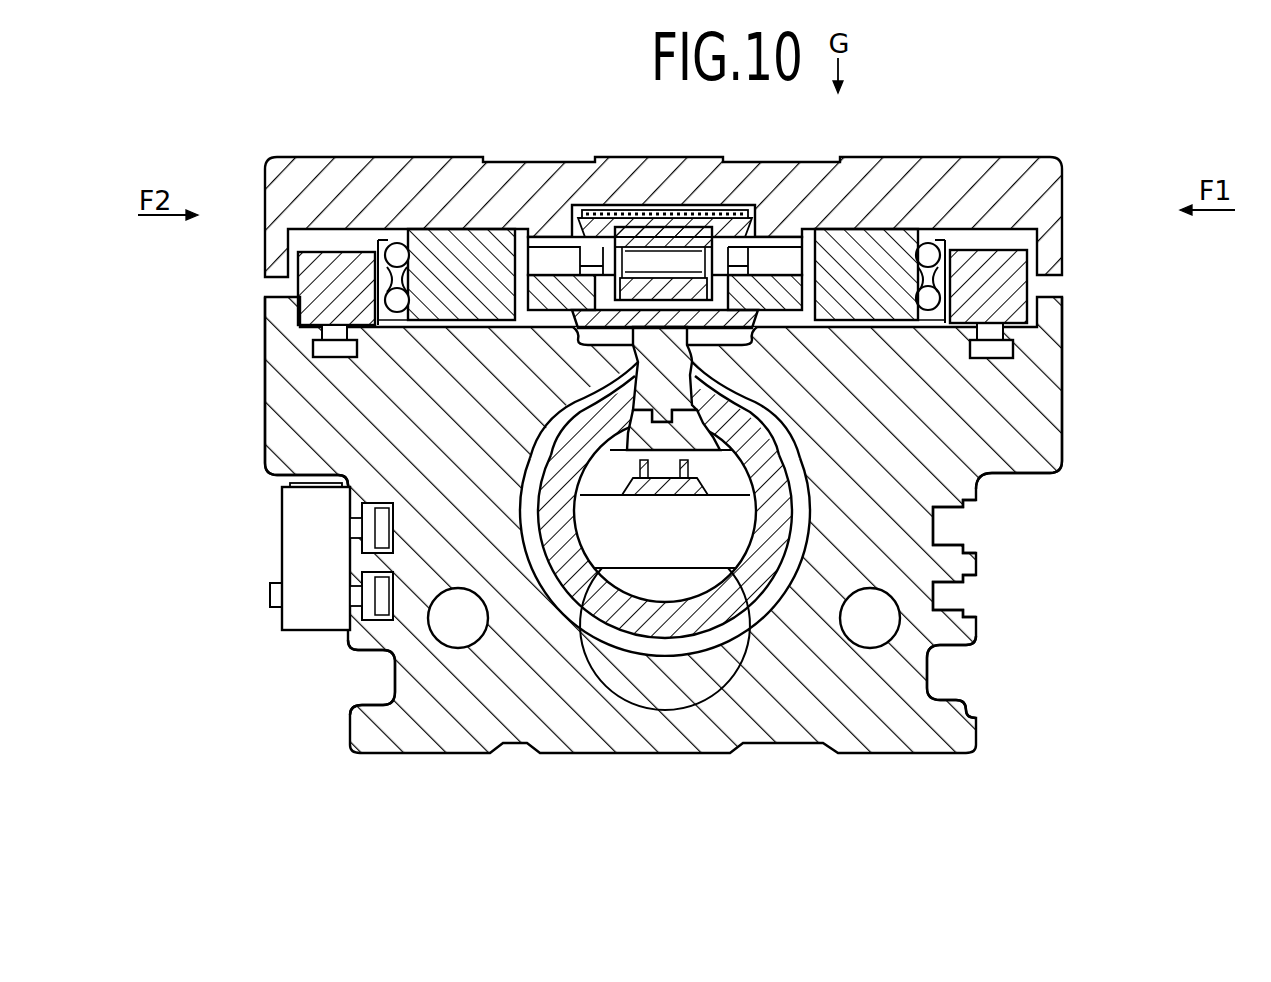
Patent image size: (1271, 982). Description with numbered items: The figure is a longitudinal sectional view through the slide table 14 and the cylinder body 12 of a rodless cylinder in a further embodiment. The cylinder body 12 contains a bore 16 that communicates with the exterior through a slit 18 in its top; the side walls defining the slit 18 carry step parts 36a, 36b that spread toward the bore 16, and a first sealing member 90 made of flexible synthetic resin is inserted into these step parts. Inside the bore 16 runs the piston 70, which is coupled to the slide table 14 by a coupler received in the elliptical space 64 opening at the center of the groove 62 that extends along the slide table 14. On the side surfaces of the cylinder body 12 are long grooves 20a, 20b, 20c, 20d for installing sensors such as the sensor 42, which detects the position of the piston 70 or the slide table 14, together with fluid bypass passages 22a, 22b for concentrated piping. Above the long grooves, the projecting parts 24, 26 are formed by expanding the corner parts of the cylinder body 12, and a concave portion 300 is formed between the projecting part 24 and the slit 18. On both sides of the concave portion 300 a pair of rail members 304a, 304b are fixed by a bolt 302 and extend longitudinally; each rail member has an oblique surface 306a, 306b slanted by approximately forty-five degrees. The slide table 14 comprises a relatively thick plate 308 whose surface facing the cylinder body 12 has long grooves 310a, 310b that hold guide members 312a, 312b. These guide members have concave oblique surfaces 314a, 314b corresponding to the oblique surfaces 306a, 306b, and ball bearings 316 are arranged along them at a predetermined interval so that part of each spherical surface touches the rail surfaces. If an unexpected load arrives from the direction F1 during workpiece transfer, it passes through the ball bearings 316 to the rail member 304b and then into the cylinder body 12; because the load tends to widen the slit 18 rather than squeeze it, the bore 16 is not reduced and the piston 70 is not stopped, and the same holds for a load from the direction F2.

The cylinder body 12 is at (645, 525).
The slide table 14 is at (1070, 160).
The bore 16 is at (670, 650).
The slit 18 is at (798, 226).
The long groove 20a is at (953, 527).
The long groove 20b is at (950, 597).
The long groove 20c is at (303, 573).
The long groove 20d is at (350, 650).
The fluid bypass passage 22a is at (873, 633).
The fluid bypass passage 22b is at (463, 632).
The projecting part 24 is at (1047, 432).
The projecting part 26 is at (273, 363).
The step part 36a is at (697, 372).
The step part 36b is at (633, 372).
The sensor 42 is at (290, 556).
The groove 62 is at (670, 208).
The elliptical space 64 is at (620, 232).
The piston 70 is at (615, 640).
The first sealing member 90 is at (670, 497).
The concave portion 300 is at (997, 278).
The bolt 302 is at (343, 362).
The rail member 304a is at (1013, 260).
The rail member 304b is at (320, 292).
The oblique surface 306a is at (385, 248).
The oblique surface 306b is at (363, 303).
The plate 308 is at (723, 182).
The long groove 310a is at (953, 265).
The long groove 310b is at (398, 268).
The guide member 312a is at (815, 237).
The guide member 312b is at (487, 250).
The oblique surface 314a is at (402, 290).
The oblique surface 314b is at (383, 323).
The ball bearing 316 is at (285, 467).